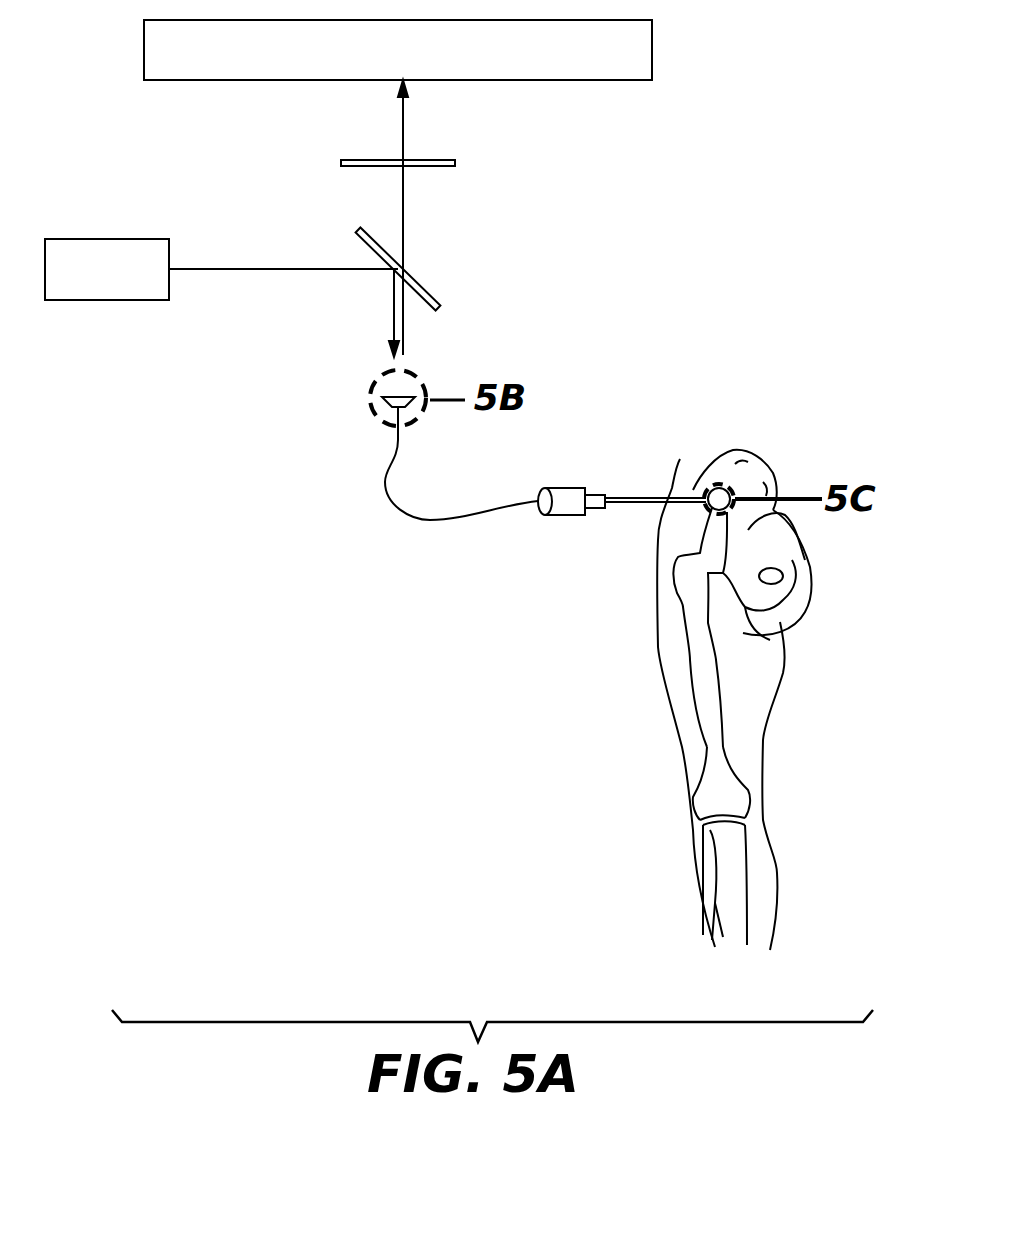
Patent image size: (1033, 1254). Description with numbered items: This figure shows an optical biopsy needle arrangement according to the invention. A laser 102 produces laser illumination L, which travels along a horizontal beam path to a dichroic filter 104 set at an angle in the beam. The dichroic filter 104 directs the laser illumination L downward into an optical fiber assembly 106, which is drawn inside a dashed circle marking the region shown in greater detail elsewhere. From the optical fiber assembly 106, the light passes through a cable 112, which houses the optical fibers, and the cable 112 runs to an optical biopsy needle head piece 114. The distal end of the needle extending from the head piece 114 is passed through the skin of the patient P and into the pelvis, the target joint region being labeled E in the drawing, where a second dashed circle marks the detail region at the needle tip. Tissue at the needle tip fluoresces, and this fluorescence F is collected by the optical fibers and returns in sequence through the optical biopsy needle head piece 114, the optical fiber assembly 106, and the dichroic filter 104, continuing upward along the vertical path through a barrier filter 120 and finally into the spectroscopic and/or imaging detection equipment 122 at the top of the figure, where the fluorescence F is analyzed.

The laser 102 is at (63, 289).
The dichroic filter 104 is at (428, 300).
The optical fiber assembly 106 is at (374, 415).
The cable 112 is at (372, 504).
The optical biopsy needle head piece 114 is at (565, 509).
The barrier filter 120 is at (455, 163).
The spectroscopic and/or imaging detection equipment 122 is at (644, 55).
The fluorescence F is at (403, 128).
The laser illumination L is at (273, 271).
The extremity (hip joint) E is at (753, 455).
The patient P is at (658, 641).